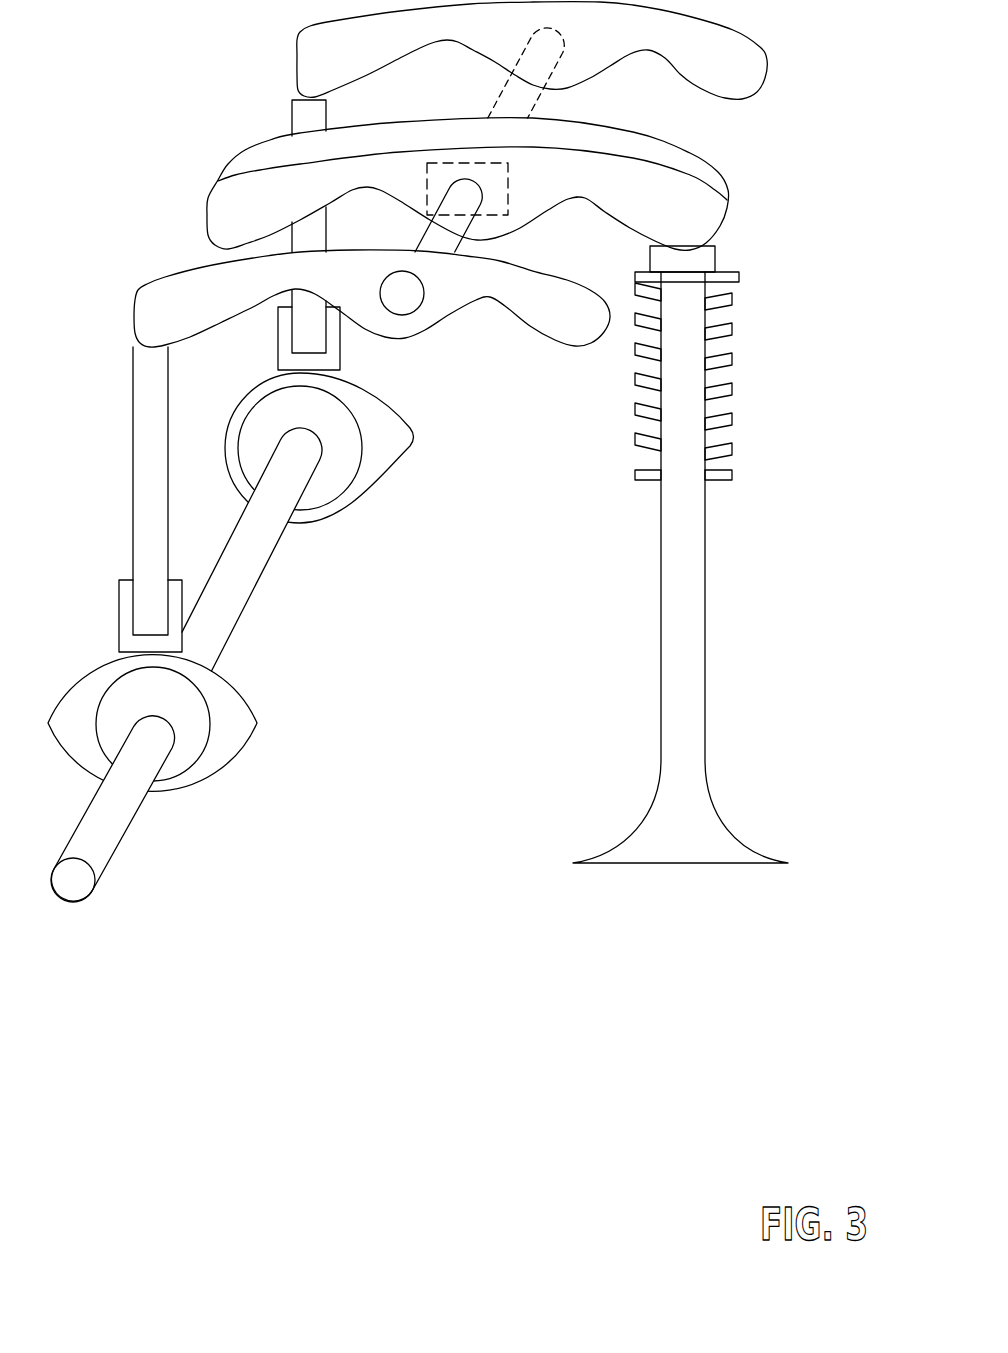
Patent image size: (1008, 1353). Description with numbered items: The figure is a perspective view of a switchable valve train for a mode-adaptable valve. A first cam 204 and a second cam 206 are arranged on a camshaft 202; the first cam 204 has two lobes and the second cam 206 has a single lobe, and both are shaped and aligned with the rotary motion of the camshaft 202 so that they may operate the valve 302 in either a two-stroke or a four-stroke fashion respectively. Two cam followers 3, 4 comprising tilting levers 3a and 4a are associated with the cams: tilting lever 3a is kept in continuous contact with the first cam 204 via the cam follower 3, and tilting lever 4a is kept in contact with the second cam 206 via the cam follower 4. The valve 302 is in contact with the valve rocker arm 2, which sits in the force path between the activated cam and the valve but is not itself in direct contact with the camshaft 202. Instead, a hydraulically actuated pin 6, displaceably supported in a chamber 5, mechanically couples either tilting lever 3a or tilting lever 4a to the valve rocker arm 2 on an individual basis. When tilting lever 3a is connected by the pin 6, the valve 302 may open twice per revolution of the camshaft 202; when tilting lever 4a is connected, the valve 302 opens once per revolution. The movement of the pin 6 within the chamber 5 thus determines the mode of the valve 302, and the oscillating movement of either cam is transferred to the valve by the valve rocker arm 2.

The valve rocker arm 2 is at (728, 188).
The cam follower 3 is at (133, 443).
The tilting lever 3a is at (143, 287).
The cam follower 4 is at (292, 123).
The tilting lever 4a is at (300, 43).
The chamber 5 is at (508, 190).
The pin 6 is at (415, 238).
The camshaft 202 is at (107, 867).
The first cam 204 is at (220, 767).
The second cam 206 is at (367, 493).
The valve 302 is at (705, 585).